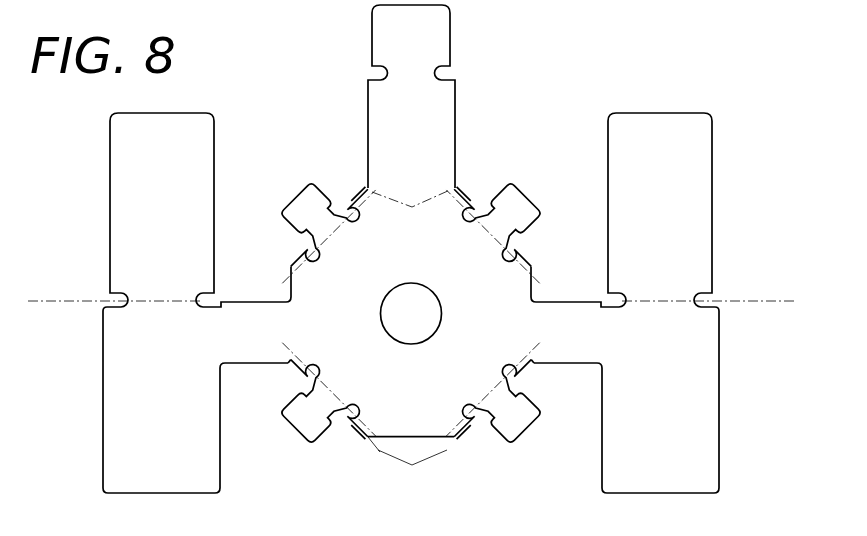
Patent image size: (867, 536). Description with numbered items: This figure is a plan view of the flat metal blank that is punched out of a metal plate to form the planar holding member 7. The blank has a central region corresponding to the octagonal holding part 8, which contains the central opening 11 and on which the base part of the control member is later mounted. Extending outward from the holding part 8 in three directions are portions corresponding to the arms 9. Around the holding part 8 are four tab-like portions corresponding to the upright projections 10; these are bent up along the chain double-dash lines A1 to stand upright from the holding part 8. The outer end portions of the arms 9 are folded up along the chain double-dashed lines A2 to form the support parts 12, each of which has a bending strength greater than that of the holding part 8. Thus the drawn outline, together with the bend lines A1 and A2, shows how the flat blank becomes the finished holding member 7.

The holding member 7 is at (513, 78).
The holding part 8 is at (385, 413).
The arm 9 is at (252, 318).
The upright projection 10 is at (306, 188).
The central opening 11 is at (381, 320).
The support part 12 is at (103, 390).
The chain double-dash line A1 is at (409, 342).
The chain double-dashed line A2 is at (411, 304).